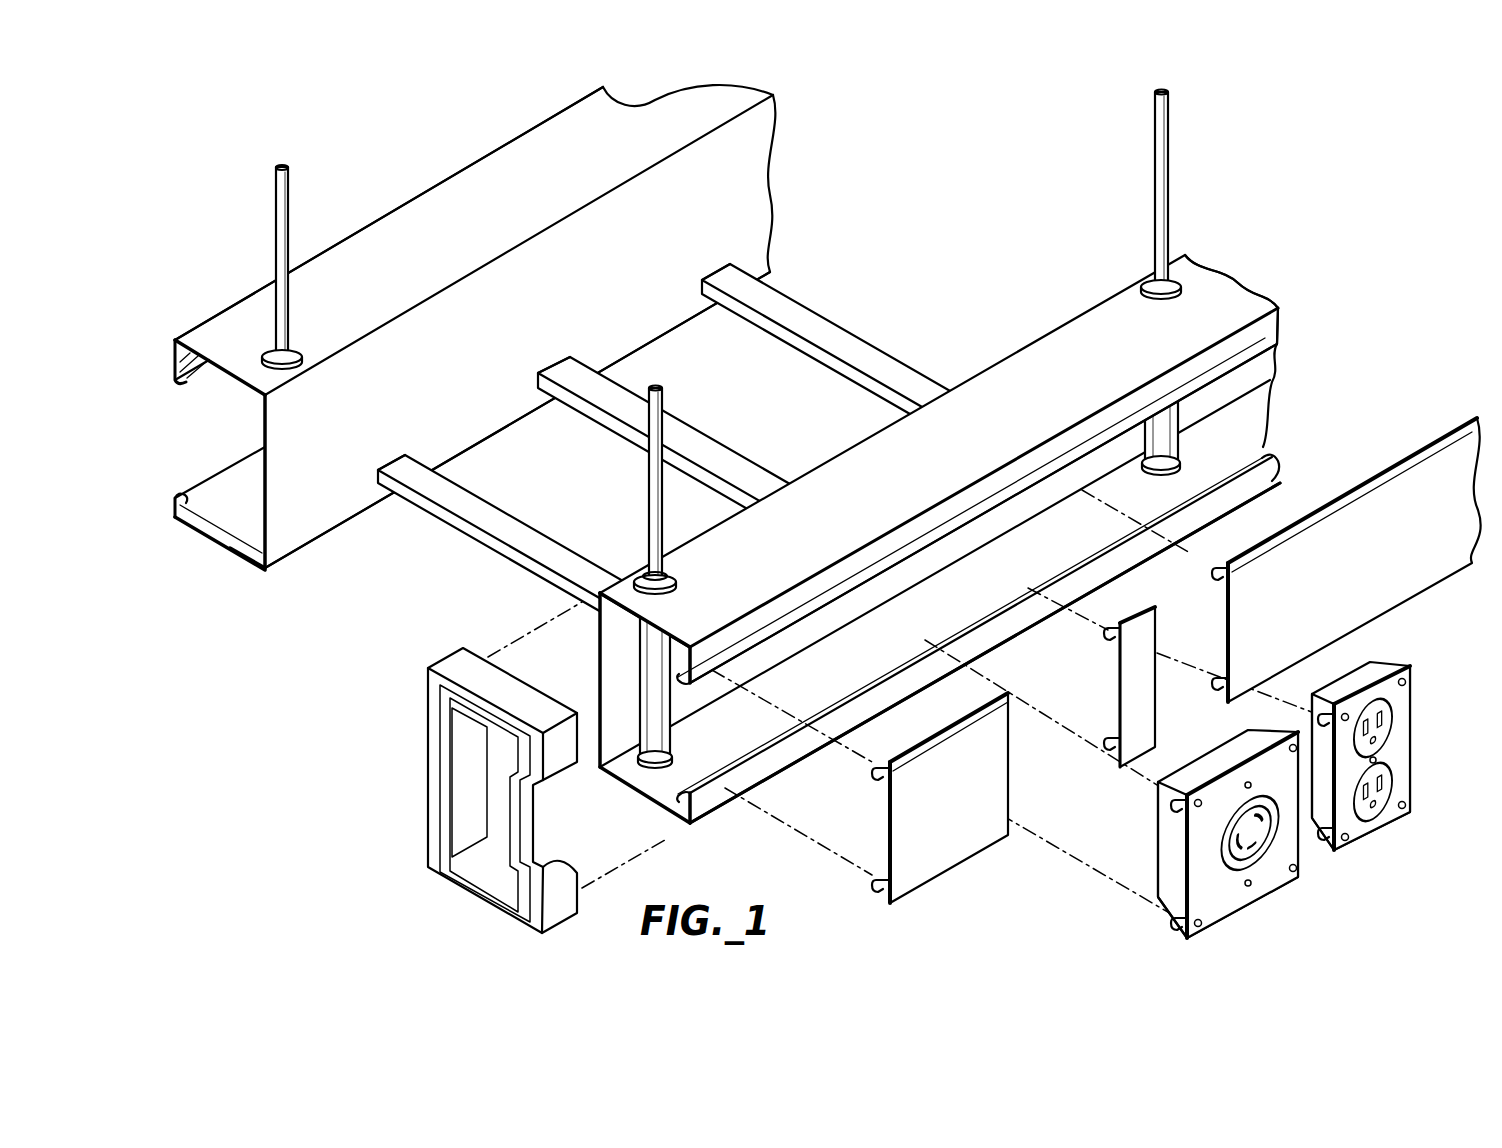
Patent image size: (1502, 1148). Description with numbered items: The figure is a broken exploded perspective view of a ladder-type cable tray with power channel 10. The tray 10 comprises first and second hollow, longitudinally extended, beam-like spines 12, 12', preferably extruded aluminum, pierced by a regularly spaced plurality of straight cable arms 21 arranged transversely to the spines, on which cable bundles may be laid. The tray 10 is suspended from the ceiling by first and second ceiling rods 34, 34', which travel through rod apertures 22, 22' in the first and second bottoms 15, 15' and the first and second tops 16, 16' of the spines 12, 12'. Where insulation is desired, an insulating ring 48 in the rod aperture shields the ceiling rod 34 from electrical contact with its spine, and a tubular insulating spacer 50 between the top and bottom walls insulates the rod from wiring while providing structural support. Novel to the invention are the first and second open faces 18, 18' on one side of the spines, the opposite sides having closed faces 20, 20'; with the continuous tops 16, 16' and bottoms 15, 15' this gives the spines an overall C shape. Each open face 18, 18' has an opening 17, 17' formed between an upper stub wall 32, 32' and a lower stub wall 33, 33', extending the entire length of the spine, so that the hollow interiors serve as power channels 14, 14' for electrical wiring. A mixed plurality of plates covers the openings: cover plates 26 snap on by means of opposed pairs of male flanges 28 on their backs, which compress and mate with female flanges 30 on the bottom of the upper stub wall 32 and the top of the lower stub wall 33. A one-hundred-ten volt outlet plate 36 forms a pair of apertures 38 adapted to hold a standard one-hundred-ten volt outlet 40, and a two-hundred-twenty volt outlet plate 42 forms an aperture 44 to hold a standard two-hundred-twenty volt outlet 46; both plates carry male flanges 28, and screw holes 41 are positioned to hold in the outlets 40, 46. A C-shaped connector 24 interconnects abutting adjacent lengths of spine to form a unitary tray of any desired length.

The ladder-type cable tray with power channel 10 is at (1258, 179).
The first spine 12 is at (940, 529).
The second spine 12' is at (507, 327).
The power channel 14 is at (940, 640).
The power channel 14' is at (209, 508).
The first bottom 15 is at (632, 797).
The second bottom 15' is at (219, 576).
The first top 16 is at (939, 469).
The second top 16' is at (475, 240).
The first opening 17 is at (1289, 420).
The second opening 17' is at (196, 418).
The first open face 18 is at (1266, 351).
The second open face 18' is at (190, 332).
The closed face 20 is at (899, 573).
The closed face 20' is at (517, 420).
The cable arm 21 is at (775, 300).
The rod aperture 22 is at (907, 437).
The rod aperture 22' is at (309, 386).
The C-shaped connector 24 is at (472, 892).
The cover plate 26 is at (957, 843).
The male flange 28 is at (880, 768).
The female flange 30 is at (678, 680).
The upper stub wall 32 is at (998, 470).
The upper stub wall 32' is at (217, 348).
The lower stub wall 33 is at (1303, 467).
The lower stub wall 33' is at (190, 482).
The first ceiling rod 34 is at (872, 336).
The second ceiling rod 34' is at (317, 259).
The 110 V outlet plate 36 is at (1403, 702).
The aperture 38 is at (1375, 811).
The 110 V outlet 40 is at (1391, 732).
The screw hole 41 is at (1412, 686).
The 220 V outlet plate 42 is at (1230, 893).
The aperture 44 is at (1231, 842).
The 220 V outlet 46 is at (1262, 838).
The insulating ring 48 is at (670, 568).
The tubular insulating spacer 50 is at (650, 677).